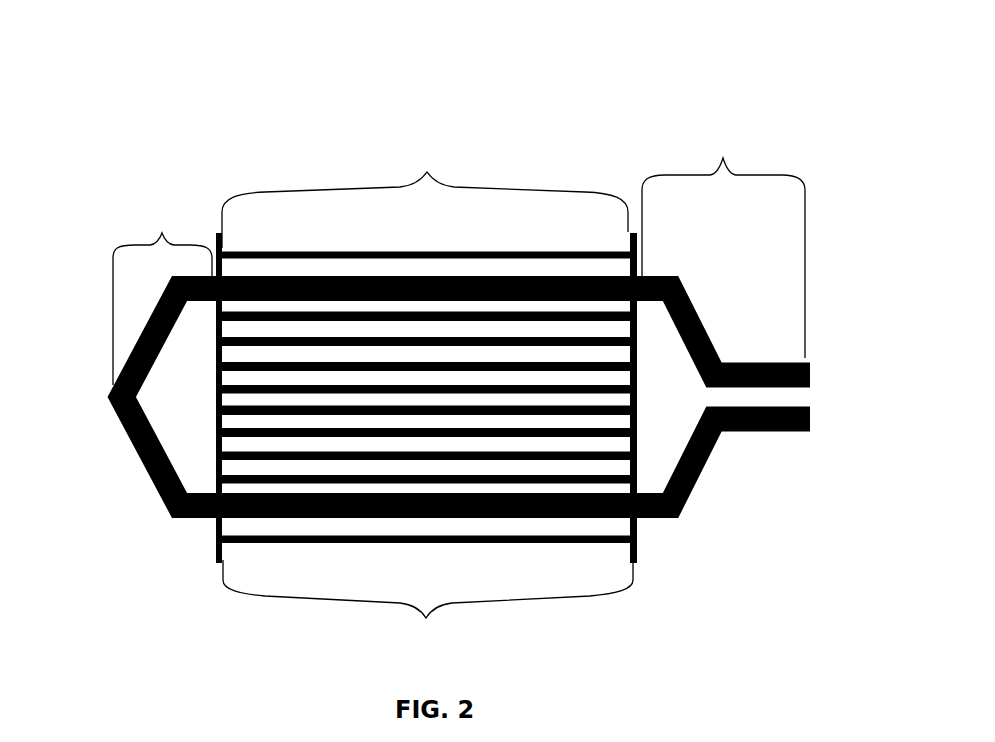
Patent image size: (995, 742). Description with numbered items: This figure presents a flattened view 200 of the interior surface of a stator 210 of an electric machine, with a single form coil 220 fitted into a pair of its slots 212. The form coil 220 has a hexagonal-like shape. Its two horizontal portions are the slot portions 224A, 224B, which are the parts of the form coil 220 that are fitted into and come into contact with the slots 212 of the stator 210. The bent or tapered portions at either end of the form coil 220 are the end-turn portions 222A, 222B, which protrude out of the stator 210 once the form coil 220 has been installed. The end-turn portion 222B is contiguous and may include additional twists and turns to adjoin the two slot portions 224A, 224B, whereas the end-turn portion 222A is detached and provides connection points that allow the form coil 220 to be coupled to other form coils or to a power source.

The flattened view 200 is at (118, 93).
The stator 210 is at (217, 548).
The slots 212 is at (233, 378).
The form coil 220 is at (680, 280).
The end-turn portion 222A is at (723, 242).
The end-turn portion 222B is at (162, 293).
The slot portion 224A is at (425, 193).
The slot portion 224B is at (428, 605).